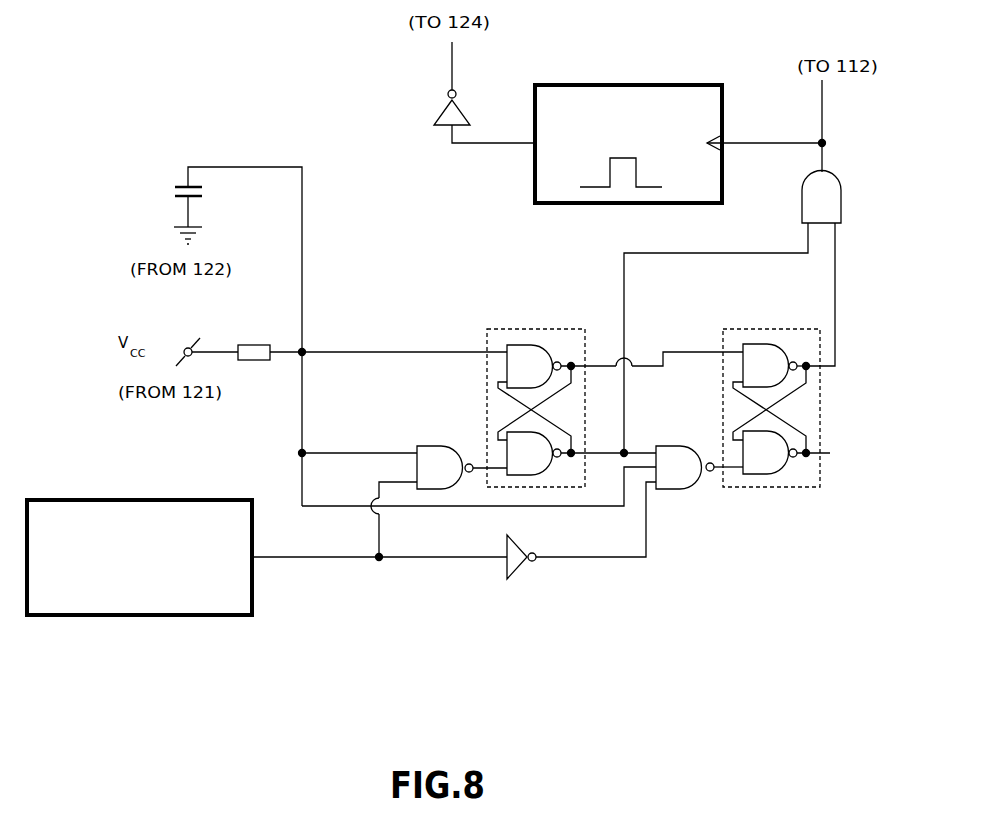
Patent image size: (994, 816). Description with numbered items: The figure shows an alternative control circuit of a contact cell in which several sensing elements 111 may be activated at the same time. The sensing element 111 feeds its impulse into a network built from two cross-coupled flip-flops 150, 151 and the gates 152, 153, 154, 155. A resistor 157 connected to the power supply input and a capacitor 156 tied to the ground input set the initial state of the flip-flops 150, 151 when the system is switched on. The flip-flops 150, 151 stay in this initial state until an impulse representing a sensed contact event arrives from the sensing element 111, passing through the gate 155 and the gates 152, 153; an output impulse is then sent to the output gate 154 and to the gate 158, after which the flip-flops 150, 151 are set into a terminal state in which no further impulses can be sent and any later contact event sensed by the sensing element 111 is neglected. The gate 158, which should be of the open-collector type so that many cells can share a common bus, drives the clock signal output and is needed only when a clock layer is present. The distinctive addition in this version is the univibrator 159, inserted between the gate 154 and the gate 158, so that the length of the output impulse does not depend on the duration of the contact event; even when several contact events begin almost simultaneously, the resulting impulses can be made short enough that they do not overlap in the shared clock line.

The sensing element 111 is at (139, 557).
The flip-flop 150 is at (615, 398).
The flip-flop 151 is at (776, 397).
The gate 152 is at (403, 503).
The gate 153 is at (522, 501).
The gate 154 is at (832, 176).
The gate 155 is at (518, 567).
The capacitor 156 is at (180, 185).
The resistor 157 is at (255, 362).
The gate 158 is at (432, 115).
The univibrator 159 is at (680, 144).